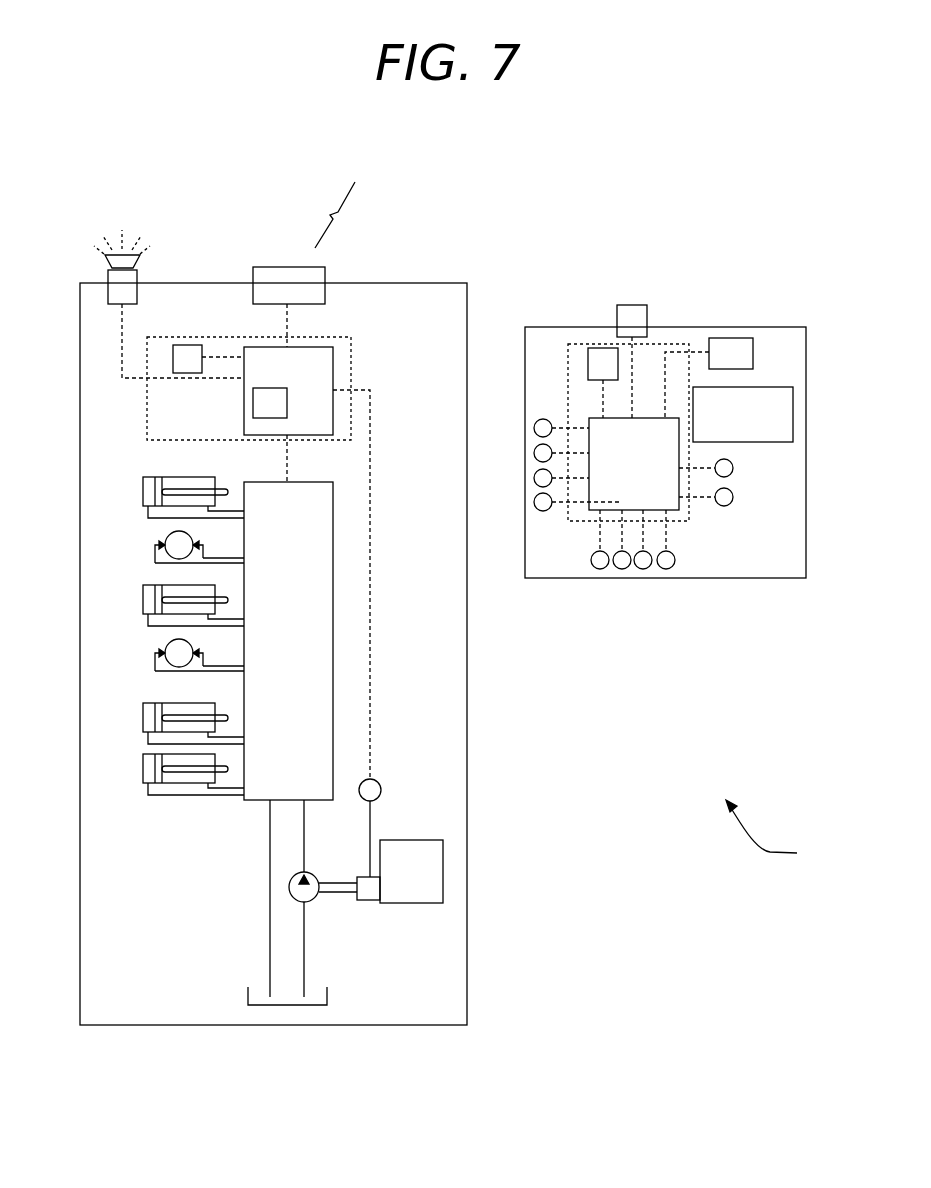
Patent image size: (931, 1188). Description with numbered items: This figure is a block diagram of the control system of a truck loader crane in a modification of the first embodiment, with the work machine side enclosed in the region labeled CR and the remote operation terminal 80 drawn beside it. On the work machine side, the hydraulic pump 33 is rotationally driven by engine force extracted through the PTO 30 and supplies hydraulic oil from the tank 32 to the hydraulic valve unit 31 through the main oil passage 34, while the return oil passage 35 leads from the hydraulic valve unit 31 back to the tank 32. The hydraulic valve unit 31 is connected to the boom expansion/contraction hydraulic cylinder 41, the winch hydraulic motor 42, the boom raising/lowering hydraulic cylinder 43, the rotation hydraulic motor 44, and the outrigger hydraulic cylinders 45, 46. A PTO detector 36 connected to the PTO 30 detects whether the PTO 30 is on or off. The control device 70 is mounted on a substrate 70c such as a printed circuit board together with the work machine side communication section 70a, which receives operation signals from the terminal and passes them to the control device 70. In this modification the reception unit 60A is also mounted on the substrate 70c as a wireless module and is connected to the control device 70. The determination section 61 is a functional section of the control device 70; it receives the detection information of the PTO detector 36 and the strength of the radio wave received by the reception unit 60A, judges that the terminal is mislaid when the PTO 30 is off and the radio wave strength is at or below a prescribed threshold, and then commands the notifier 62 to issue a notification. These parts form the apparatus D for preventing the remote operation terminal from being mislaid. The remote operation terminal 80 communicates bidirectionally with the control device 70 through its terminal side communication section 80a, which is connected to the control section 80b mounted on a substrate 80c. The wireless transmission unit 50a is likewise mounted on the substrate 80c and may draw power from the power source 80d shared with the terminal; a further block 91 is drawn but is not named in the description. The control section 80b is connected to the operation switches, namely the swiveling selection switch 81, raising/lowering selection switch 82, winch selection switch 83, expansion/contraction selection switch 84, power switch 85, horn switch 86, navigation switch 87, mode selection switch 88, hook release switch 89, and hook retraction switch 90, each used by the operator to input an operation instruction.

The crane CR is at (415, 283).
The notifier 62 is at (108, 278).
The work machine side communication section 70a is at (326, 282).
The substrate 70c is at (340, 355).
The reception unit 60A is at (185, 355).
The control device 70 is at (333, 365).
The determination section 61 is at (253, 403).
The hydraulic valve unit 31 is at (258, 482).
The boom expansion/contraction hydraulic cylinder 41 is at (143, 486).
The winch hydraulic motor 42 is at (165, 542).
The boom raising/lowering hydraulic cylinder 43 is at (143, 594).
The rotation hydraulic motor 44 is at (165, 650).
The outrigger hydraulic cylinder 45 is at (143, 712).
The outrigger hydraulic cylinder 46 is at (143, 763).
The PTO detector 36 is at (380, 785).
The return oil passage 35 is at (268, 862).
The main oil passage 34 is at (305, 847).
The hydraulic pump 33 is at (312, 900).
The PTO 30 is at (362, 900).
The tank 32 is at (328, 993).
The remote operation terminal 80 is at (753, 327).
The terminal side communication section 80a is at (632, 305).
The substrate 80c is at (580, 348).
The wireless transmission unit 50a is at (600, 355).
The power source 80d is at (729, 345).
The display 91 is at (765, 387).
The control section 80b is at (598, 432).
The navigation switch 87 is at (534, 425).
The mode selection switch 88 is at (534, 450).
The hook release switch 89 is at (534, 475).
The hook retraction switch 90 is at (534, 499).
The power switch 85 is at (734, 470).
The horn switch 86 is at (734, 498).
The swiveling selection switch 81 is at (600, 569).
The raising/lowering selection switch 82 is at (622, 569).
The winch selection switch 83 is at (643, 569).
The expansion/contraction selection switch 84 is at (666, 569).
The apparatus for preventing a remote operation terminal from being mislaid D is at (817, 869).